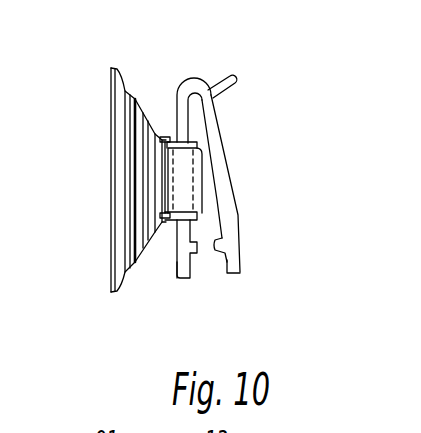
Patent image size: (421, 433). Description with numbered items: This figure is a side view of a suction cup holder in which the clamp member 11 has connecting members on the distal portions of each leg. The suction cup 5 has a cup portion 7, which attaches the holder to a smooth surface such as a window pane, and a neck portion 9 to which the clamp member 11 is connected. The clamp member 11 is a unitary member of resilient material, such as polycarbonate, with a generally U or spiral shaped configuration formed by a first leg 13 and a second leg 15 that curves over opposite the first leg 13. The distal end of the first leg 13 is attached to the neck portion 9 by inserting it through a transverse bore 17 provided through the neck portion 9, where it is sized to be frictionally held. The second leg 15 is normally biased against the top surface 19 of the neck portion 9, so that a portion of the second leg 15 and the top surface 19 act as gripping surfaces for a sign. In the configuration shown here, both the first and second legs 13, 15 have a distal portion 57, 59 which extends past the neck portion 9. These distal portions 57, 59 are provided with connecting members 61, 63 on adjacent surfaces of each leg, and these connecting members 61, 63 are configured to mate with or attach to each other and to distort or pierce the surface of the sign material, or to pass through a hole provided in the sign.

The suction cup 5 is at (117, 177).
The cup portion 7 is at (110, 112).
The neck portion 9 is at (157, 240).
The clamp member 11 is at (213, 103).
The first leg 13 is at (180, 90).
The second leg 15 is at (231, 183).
The transverse bore 17 is at (200, 222).
The top surface 19 is at (180, 205).
The distal portion 57 is at (176, 278).
The distal portion 59 is at (242, 270).
The connecting member 61 is at (190, 278).
The connecting member 63 is at (230, 290).